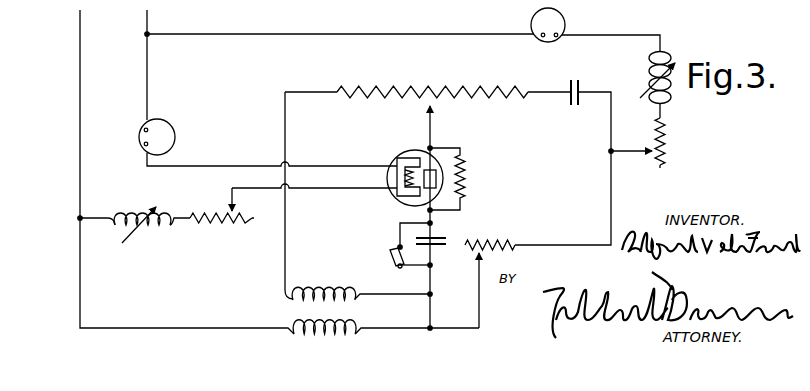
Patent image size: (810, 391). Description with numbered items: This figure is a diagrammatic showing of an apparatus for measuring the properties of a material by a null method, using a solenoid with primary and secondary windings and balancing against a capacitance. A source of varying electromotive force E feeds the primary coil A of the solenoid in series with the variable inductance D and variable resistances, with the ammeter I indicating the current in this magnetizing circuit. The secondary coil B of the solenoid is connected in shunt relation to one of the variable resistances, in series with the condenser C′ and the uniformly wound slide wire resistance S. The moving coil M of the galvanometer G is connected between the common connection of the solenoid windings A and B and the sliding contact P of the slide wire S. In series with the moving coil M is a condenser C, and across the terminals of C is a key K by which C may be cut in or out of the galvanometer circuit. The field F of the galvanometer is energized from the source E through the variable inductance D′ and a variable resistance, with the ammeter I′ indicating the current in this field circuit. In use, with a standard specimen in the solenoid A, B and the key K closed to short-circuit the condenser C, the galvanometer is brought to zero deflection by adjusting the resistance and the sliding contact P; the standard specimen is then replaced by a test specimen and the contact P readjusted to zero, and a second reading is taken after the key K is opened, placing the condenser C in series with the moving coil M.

The source of varying electromotive force E is at (113, 23).
The ammeter I′ is at (180, 118).
The ammeter I is at (565, 15).
The uniformly wound slide wire resistance S is at (452, 90).
The sliding contact P is at (437, 107).
The heater / filament element of tube H is at (414, 156).
The moving coil of the galvanometer M is at (432, 168).
The resistance shunted across tube R′ is at (443, 202).
The variable inductance D is at (650, 72).
The condenser C′ is at (576, 105).
The variable inductance D′ is at (157, 232).
The field of the galvanometer F is at (398, 183).
The key K is at (391, 256).
The condenser C is at (440, 249).
The galvanometer G is at (486, 221).
The secondary coil B is at (322, 291).
The primary coil A is at (290, 328).